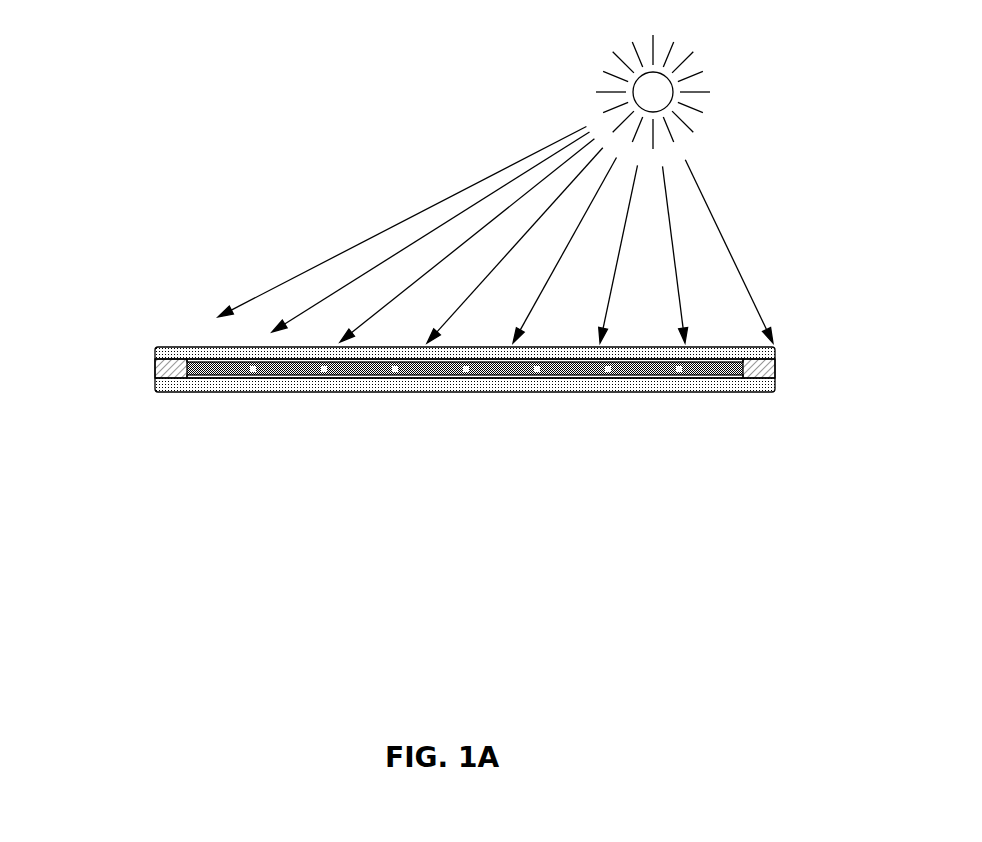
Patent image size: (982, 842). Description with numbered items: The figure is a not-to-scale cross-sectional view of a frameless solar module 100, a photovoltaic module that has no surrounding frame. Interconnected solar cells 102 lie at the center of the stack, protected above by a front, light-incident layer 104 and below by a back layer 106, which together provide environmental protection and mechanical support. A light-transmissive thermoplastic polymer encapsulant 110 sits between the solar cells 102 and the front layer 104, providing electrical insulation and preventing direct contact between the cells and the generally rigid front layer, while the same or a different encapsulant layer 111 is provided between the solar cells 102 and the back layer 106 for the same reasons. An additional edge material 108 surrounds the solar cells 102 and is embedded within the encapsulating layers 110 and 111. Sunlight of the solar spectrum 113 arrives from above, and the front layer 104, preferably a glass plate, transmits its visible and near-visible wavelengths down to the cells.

The frameless solar module 100 is at (449, 442).
The solar cells 102 is at (498, 369).
The front layer 104 is at (419, 326).
The back layer 106 is at (419, 423).
The edge material 108 is at (462, 384).
The encapsulant 110 is at (403, 339).
The encapsulant layer 111 is at (403, 402).
The solar spectrum 113 is at (495, 189).